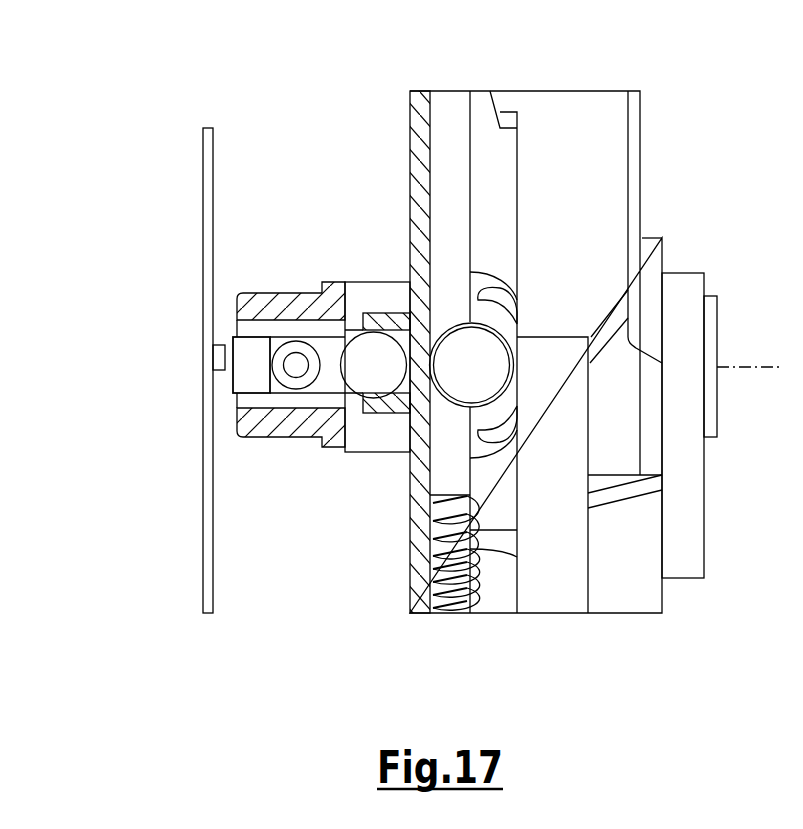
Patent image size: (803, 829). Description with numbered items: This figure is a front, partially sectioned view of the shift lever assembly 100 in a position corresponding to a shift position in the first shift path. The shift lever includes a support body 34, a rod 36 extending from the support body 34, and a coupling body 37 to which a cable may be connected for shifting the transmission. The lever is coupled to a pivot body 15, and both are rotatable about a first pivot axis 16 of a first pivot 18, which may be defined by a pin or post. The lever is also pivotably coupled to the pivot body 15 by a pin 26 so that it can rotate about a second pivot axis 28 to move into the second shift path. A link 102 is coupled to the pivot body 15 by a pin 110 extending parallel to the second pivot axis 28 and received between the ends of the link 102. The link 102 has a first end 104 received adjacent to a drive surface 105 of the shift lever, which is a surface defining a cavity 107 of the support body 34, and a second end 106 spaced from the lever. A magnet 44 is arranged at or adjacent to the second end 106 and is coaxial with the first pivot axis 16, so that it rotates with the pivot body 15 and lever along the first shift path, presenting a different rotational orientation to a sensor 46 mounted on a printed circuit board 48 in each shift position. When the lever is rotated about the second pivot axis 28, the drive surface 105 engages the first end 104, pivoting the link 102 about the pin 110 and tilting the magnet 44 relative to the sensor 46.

The shift lever assembly 100 is at (697, 113).
The pivot body 15 is at (392, 280).
The first pivot axis 16 is at (759, 368).
The first pivot 18 is at (712, 296).
The pin 26 is at (485, 325).
The second pivot axis 28 is at (482, 358).
The support body 34 is at (482, 91).
The rod 36 is at (450, 90).
The coupling body 37 is at (582, 97).
The magnet 44 is at (225, 377).
The sensor 46 is at (222, 345).
The printed circuit board 48 is at (213, 153).
The link 102 is at (327, 380).
The first end 104 is at (358, 350).
The drive surface 105 is at (378, 393).
The cavity 107 is at (365, 436).
The second end 106 is at (232, 384).
The pin 110 is at (292, 372).